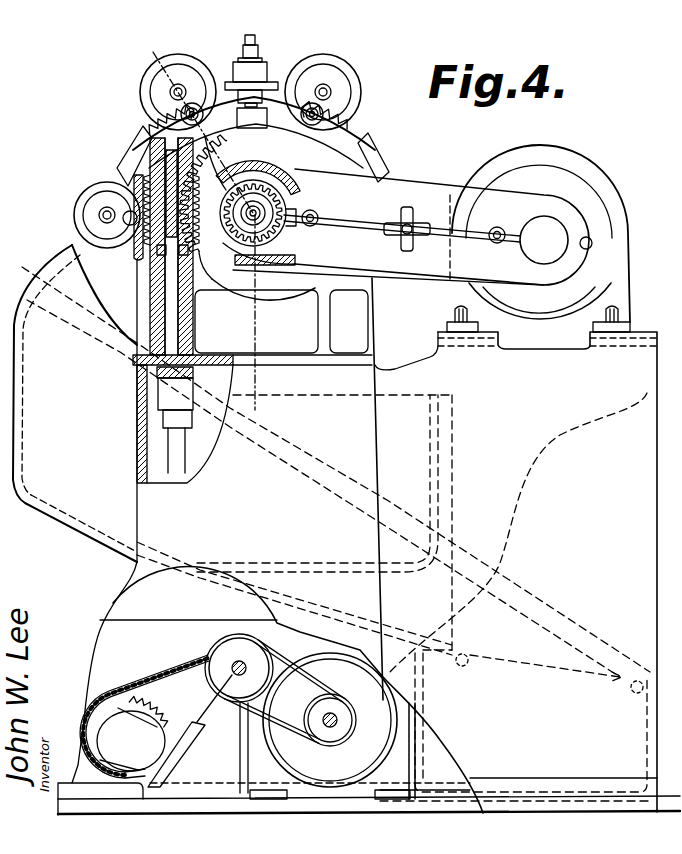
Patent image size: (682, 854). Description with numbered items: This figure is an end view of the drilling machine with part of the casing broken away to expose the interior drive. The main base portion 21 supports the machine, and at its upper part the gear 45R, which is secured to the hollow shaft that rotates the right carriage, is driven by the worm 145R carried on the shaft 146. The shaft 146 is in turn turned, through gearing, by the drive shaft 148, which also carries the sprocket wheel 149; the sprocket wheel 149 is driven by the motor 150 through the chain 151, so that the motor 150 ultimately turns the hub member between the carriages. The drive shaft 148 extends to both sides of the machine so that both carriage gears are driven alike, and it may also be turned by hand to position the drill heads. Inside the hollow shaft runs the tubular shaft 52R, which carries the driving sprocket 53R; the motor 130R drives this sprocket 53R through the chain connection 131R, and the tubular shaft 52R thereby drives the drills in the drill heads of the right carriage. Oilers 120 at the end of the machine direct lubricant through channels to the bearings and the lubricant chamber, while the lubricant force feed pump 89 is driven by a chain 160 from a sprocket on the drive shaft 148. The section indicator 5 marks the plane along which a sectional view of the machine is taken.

The section line 5- 5 is at (153, 52).
The main base portion 21 is at (157, 518).
The gear 45R is at (220, 253).
The tubular shaft 52R is at (275, 212).
The driving sprocket 53R is at (275, 226).
The lubricant force feed pump 89 is at (112, 725).
The oilers 120 is at (256, 74).
The motor 130R is at (591, 180).
The chain connection 131R is at (296, 197).
The worm 145R is at (150, 190).
The shaft 146 is at (172, 270).
The drive shaft 148 is at (238, 674).
The sprocket wheel 149 is at (220, 650).
The motor 150 is at (333, 672).
The chain 151 is at (277, 727).
The chain 160 is at (137, 687).